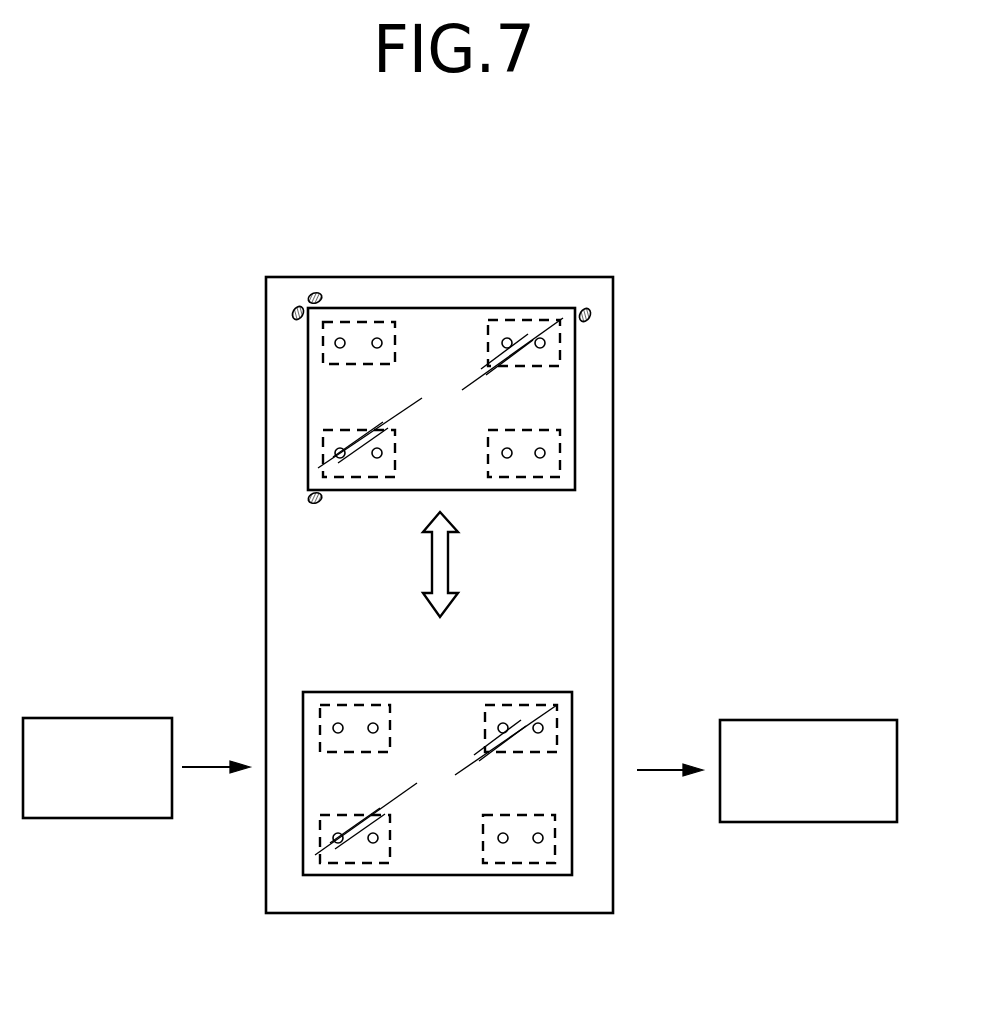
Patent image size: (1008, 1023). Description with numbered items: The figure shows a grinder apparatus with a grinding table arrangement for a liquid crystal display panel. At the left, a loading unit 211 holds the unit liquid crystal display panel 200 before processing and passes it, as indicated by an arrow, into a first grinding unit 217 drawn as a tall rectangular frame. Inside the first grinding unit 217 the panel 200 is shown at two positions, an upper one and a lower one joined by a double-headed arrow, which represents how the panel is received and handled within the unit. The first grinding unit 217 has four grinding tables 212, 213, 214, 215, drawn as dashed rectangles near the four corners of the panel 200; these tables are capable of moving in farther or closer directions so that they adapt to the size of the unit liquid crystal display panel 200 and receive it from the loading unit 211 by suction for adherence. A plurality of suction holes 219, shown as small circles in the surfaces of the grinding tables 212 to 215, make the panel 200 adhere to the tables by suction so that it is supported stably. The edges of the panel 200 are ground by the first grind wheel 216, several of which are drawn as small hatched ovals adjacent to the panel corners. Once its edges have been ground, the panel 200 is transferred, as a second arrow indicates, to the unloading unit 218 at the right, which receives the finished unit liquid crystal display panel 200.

The liquid crystal display panel 200 is at (308, 390).
The loading unit 211 is at (95, 718).
The grinding table 212 is at (308, 340).
The grinding table 213 is at (575, 338).
The grinding table 214 is at (308, 447).
The grinding table 215 is at (575, 444).
The first grind wheel 216 is at (292, 308).
The first grinding unit 217 is at (613, 547).
The unloading unit 218 is at (805, 720).
The suction holes 219 is at (503, 341).